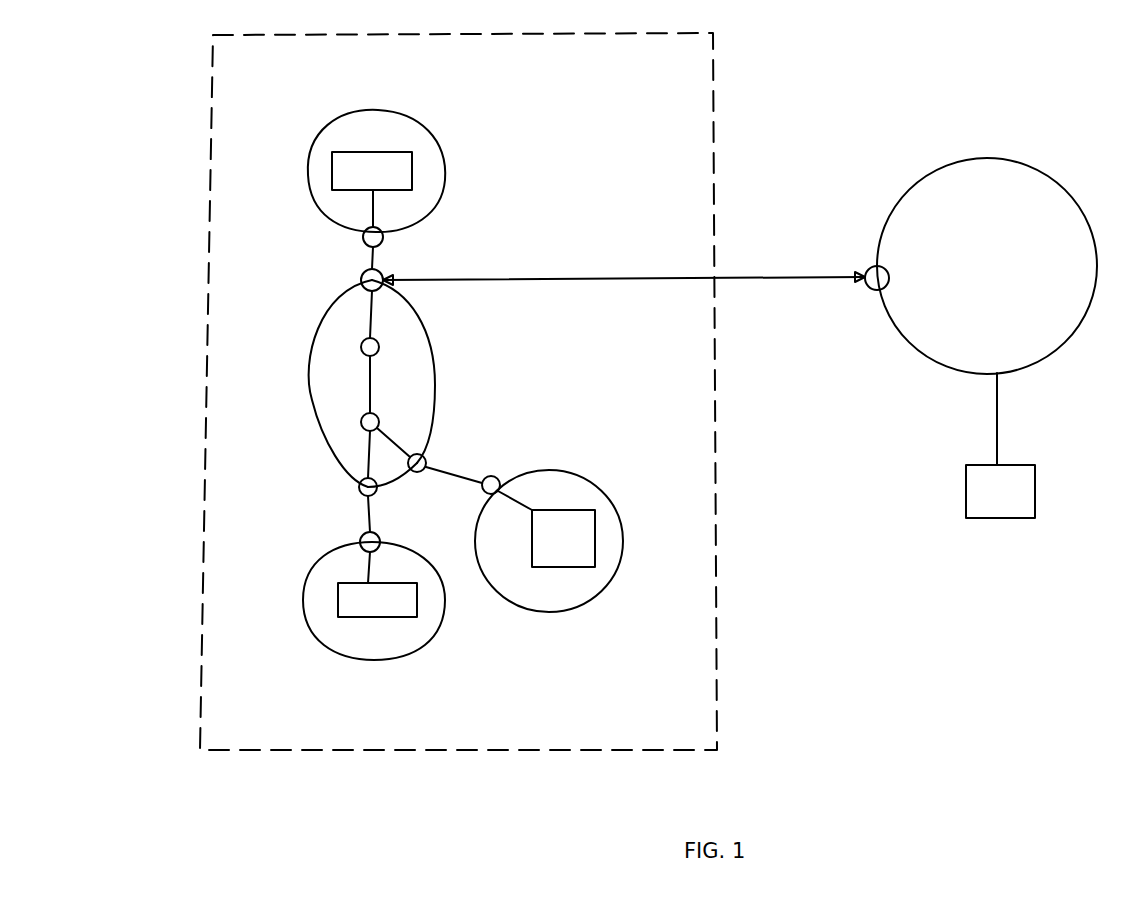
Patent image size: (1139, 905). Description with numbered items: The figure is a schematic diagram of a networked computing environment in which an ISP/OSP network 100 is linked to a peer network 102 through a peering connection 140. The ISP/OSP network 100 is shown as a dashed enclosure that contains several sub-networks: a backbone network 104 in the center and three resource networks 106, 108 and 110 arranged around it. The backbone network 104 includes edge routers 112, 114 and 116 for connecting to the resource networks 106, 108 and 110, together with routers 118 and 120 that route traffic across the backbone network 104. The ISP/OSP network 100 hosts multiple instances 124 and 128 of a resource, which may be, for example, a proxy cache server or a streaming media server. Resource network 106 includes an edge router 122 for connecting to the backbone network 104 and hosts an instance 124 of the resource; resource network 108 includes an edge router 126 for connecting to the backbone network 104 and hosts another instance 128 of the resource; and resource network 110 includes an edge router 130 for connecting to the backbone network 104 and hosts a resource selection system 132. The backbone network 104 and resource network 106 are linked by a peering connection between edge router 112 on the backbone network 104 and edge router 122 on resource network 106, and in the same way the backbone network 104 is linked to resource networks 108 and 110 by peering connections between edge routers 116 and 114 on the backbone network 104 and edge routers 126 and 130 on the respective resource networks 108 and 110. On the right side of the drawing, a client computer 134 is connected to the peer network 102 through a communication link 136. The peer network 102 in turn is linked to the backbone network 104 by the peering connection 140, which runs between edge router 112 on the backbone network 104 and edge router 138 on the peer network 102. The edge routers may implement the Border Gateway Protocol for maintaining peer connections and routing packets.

The ISP/OSP network 100 is at (713, 83).
The peer network 102 is at (1003, 157).
The backbone network 104 is at (432, 337).
The resource network 106 is at (435, 131).
The resource network 108 is at (378, 660).
The resource network 110 is at (625, 521).
The edge router 112 is at (383, 272).
The edge router 114 is at (426, 457).
The edge router 116 is at (359, 492).
The router 118 is at (380, 345).
The router 120 is at (378, 416).
The edge router 122 is at (362, 243).
The instance of the resource 124 is at (365, 139).
The edge router 126 is at (382, 537).
The instance of the resource 128 is at (372, 582).
The edge router 130 is at (499, 478).
The resource selection system 132 is at (532, 537).
The client computer 134 is at (1037, 488).
The communication link 136 is at (999, 423).
The edge router 138 is at (890, 272).
The peering connection 140 is at (583, 275).